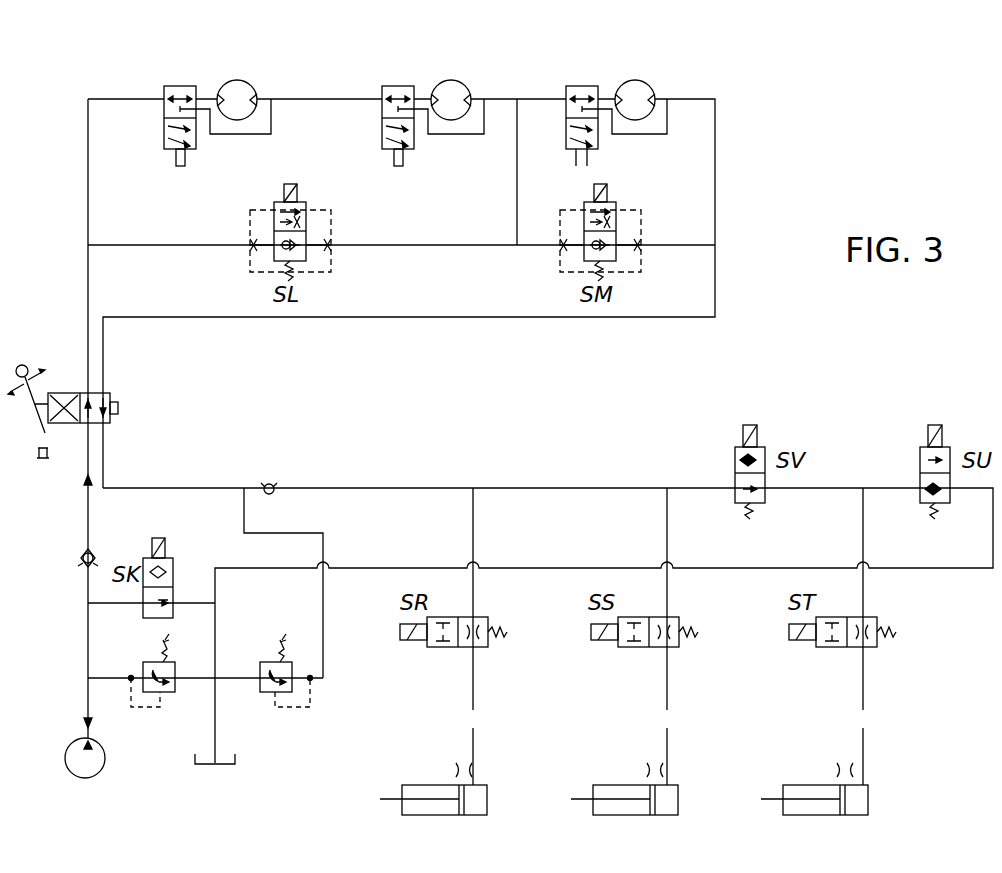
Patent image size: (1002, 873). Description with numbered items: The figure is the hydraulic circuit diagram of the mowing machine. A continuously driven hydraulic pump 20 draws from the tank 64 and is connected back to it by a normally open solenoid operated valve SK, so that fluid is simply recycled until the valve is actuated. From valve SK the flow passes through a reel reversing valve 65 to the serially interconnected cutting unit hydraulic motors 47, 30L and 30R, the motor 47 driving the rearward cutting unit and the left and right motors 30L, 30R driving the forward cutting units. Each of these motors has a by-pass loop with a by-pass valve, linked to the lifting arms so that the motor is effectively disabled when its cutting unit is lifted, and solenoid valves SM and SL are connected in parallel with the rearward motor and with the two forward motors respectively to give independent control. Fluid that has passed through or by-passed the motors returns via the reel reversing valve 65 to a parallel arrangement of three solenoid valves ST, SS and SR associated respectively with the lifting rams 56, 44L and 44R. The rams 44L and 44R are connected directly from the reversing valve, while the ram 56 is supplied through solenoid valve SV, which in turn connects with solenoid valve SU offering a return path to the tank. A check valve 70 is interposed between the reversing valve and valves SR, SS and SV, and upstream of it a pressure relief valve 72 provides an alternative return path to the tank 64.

The hydraulic pump 20 is at (105, 760).
The left cutting unit hydraulic motor 30L is at (234, 70).
The right cutting unit hydraulic motor 30R is at (438, 82).
The cutting motor 47 is at (648, 88).
The reel reversing valve 65 is at (118, 408).
The check valve 70 is at (273, 494).
The pressure relief valve 72 is at (275, 708).
The tank 64 is at (222, 770).
The right lifting ram 44R is at (433, 785).
The left lifting ram 44L is at (624, 785).
The lifting ram 56 is at (824, 785).